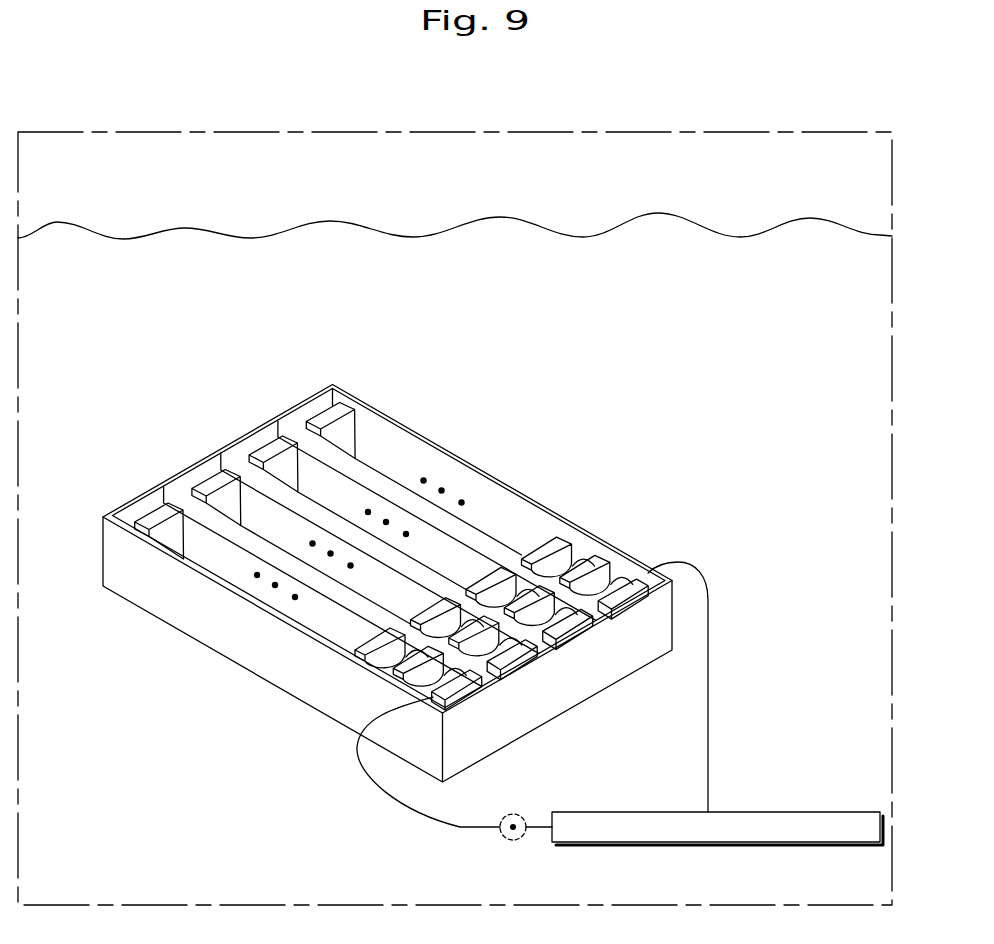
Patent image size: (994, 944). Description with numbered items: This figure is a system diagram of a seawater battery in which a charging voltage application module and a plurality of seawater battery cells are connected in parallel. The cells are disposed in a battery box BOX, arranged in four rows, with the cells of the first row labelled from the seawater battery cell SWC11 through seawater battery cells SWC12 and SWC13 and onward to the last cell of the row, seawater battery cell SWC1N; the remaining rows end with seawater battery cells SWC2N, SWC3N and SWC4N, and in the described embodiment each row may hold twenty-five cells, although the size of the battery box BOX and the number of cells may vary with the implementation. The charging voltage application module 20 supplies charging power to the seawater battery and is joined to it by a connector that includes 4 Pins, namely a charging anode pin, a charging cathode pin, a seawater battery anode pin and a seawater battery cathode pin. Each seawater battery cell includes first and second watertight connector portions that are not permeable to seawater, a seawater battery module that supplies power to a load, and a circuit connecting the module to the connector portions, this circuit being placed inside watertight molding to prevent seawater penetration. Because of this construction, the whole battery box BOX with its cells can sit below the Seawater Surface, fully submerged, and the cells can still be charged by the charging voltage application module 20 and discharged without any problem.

The seawater battery cell SWC1N is at (157, 516).
The seawater battery cell SWC2N is at (214, 483).
The seawater battery cell SWC3N is at (271, 449).
The seawater battery cell SWC4N is at (328, 416).
The seawater battery cell SWC11 is at (460, 688).
The seawater battery cell SWC12 is at (396, 672).
The seawater battery cell SWC13 is at (370, 634).
The battery box BOX is at (220, 654).
The charging voltage application module 20 is at (884, 827).
The four pins of the connector 4 Pins is at (520, 841).
The seawater surface Seawater Surface is at (740, 237).